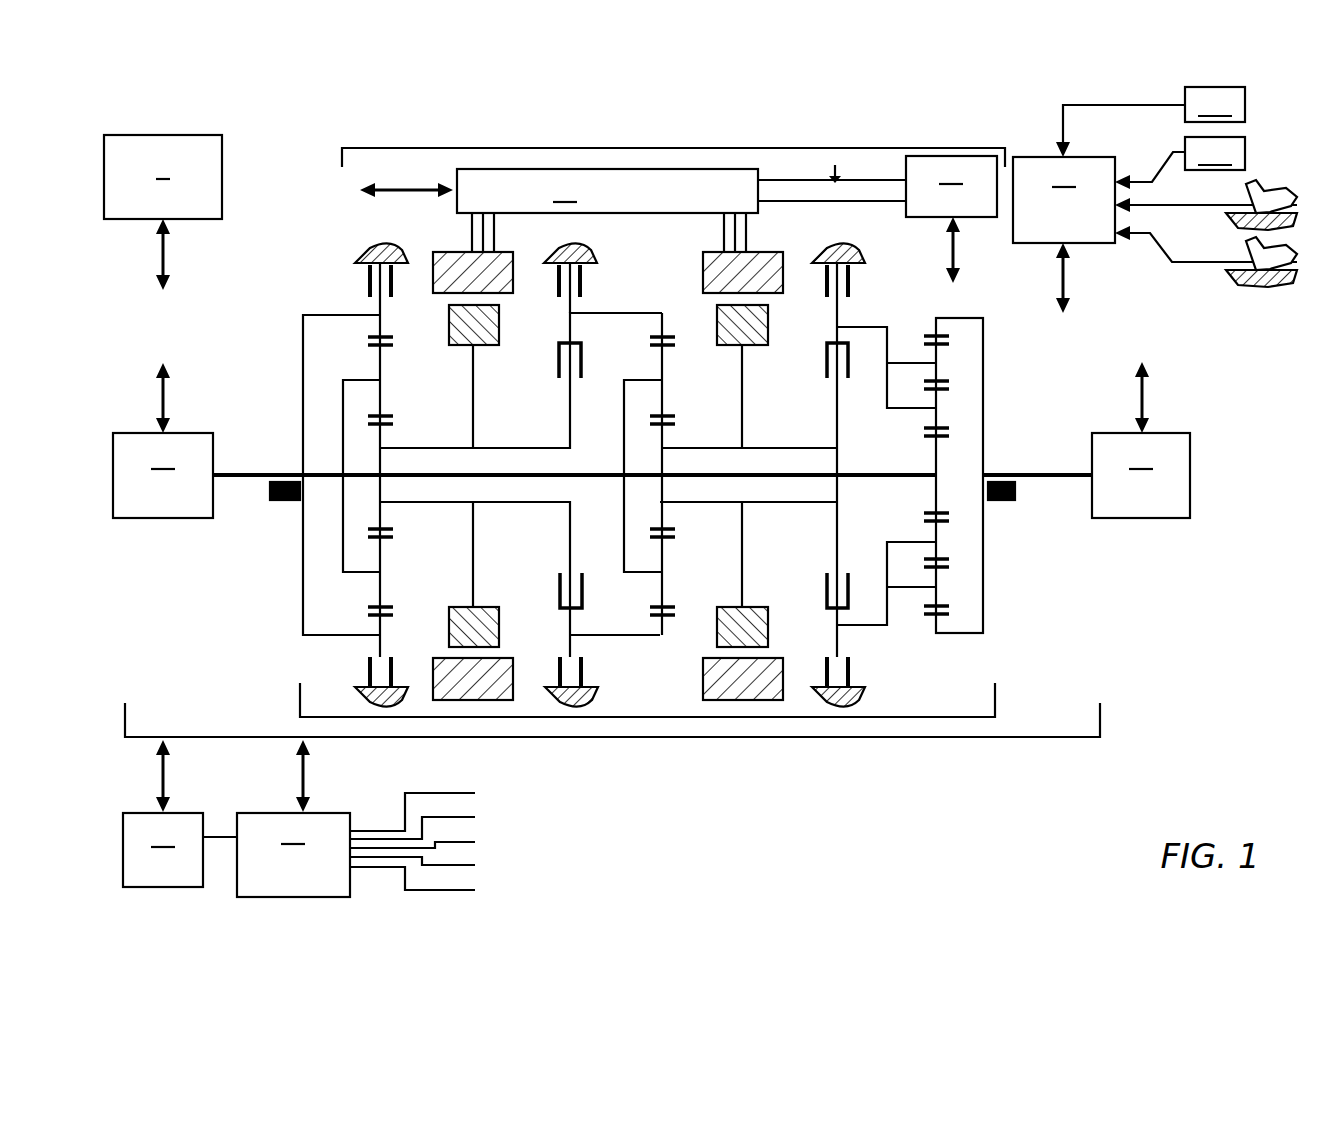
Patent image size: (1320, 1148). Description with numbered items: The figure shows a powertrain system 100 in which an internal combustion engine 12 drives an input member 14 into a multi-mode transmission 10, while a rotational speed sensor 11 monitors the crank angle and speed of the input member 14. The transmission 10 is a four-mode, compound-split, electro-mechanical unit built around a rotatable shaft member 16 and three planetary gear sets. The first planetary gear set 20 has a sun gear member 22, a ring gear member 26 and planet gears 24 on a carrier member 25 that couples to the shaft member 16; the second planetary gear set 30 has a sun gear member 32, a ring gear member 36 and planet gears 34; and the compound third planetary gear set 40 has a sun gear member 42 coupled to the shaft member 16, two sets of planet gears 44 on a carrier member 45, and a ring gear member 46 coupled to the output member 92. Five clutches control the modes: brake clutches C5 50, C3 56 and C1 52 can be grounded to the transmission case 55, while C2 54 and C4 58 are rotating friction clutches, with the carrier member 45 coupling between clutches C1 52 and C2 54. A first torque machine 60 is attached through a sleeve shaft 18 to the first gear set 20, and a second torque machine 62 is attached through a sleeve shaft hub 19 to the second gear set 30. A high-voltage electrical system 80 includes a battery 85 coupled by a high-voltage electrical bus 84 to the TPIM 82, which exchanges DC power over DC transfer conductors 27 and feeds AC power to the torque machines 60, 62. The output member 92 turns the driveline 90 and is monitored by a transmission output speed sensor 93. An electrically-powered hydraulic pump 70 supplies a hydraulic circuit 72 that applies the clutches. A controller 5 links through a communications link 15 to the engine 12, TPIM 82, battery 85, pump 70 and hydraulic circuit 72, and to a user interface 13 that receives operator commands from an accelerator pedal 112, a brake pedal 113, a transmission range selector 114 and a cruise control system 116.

The controller 5 is at (163, 177).
The communications link 15 is at (134, 264).
The internal combustion engine 12 is at (163, 475).
The input member 14 is at (252, 478).
The rotational speed sensor 11 is at (284, 501).
The rotatable shaft member 16 is at (582, 474).
The carrier member 25 is at (346, 450).
The first planetary gear set 20 is at (392, 517).
The sun gear member 22 is at (385, 428).
The planet gears 24 is at (383, 380).
The ring gear member 26 is at (384, 332).
The clutch C5 50 is at (368, 287).
The transmission case 55 is at (372, 247).
The DC transfer conductors 27 is at (490, 225).
The transmission power inverter control module 82 is at (607, 191).
The high-voltage electrical system 80 is at (680, 148).
The high-voltage electrical bus 84 is at (870, 180).
The high-voltage battery 85 is at (951, 186).
The clutch C3 56 is at (584, 282).
The clutch C4 58 is at (556, 370).
The first torque machine 60 is at (495, 298).
The sleeve shaft 18 is at (517, 448).
The second planetary gear set 30 is at (666, 570).
The sun gear member 32 is at (666, 428).
The planet gears 34 is at (665, 380).
The ring gear member 36 is at (665, 332).
The second torque machine 62 is at (760, 298).
The clutch C1 52 is at (852, 290).
The clutch C2 54 is at (824, 370).
The sleeve shaft hub 19 is at (790, 448).
The carrier member 45 is at (888, 333).
The third planetary gear set 40 is at (922, 466).
The sun gear member 42 is at (940, 510).
The planet gears 44 is at (940, 542).
The ring gear member 46 is at (932, 616).
The user interface 13 is at (1064, 200).
The vehicle speed cruise control system 116 is at (1150, 122).
The transmission range selector 114 is at (1180, 163).
The operator brake pedal 113 is at (1252, 202).
The accelerator pedal 112 is at (1250, 255).
The output member 92 is at (1043, 473).
The driveline 90 is at (1141, 475).
The transmission output speed sensor 93 is at (1016, 492).
The hydraulic pump 70 is at (180, 850).
The hydraulic circuit 72 is at (356, 845).
The powertrain system 100 is at (682, 737).
The multi-mode transmission 10 is at (775, 717).